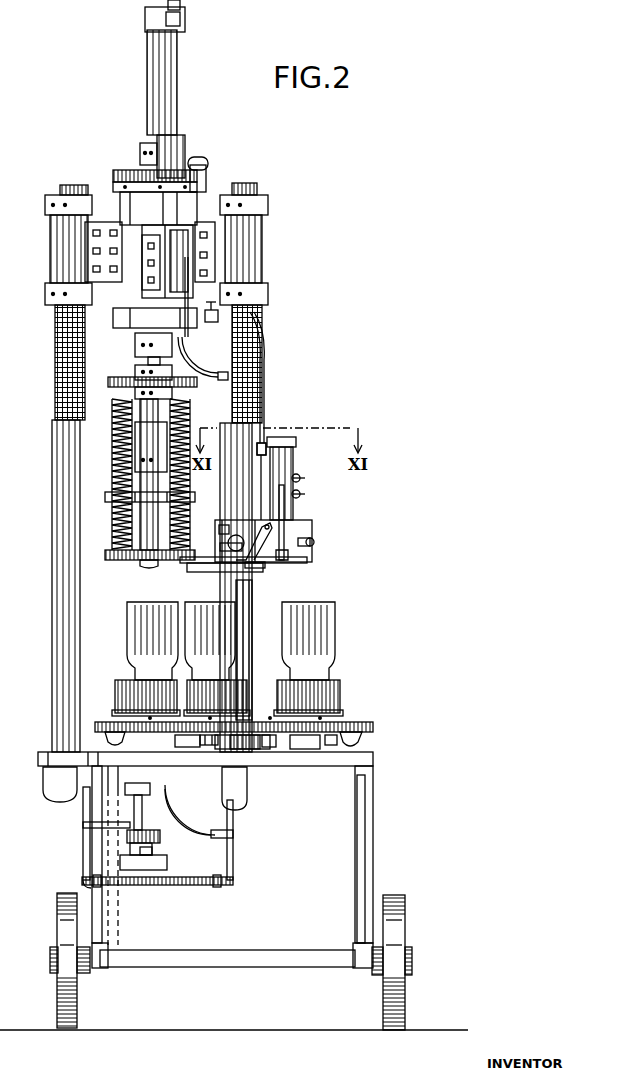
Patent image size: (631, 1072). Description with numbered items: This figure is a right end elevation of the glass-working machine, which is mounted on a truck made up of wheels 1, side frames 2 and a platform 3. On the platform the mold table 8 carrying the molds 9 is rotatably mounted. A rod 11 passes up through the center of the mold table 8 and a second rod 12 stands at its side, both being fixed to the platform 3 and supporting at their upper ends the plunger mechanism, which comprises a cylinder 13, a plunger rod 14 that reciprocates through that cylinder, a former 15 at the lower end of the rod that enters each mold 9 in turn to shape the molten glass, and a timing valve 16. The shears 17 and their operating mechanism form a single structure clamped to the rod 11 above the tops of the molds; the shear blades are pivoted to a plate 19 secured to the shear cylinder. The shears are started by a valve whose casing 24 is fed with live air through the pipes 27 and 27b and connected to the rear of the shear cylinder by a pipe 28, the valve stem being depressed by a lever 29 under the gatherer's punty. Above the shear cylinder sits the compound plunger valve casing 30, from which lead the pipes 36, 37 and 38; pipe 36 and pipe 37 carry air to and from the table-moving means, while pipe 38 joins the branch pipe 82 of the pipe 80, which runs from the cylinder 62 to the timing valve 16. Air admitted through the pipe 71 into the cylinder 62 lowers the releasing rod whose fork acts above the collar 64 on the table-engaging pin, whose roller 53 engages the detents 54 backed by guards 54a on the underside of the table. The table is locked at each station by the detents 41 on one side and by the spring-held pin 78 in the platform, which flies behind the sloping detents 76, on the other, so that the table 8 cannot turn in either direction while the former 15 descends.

The wheels 1 is at (57, 928).
The side frames 2 is at (373, 813).
The platform 3 is at (376, 757).
The mold table 8 is at (362, 722).
The molds 9 is at (127, 640).
The rod 11 is at (246, 652).
The rod 12 is at (52, 589).
The cylinder 13 is at (120, 195).
The plunger rod 14 is at (149, 89).
The former 15 is at (148, 540).
The timing valve 16 is at (167, 287).
The shears 17 is at (203, 570).
The plate 19 is at (283, 565).
The valve casing 24 is at (275, 553).
The pipe 27 is at (287, 534).
The pipe 27b is at (188, 292).
The pipe 28 is at (312, 543).
The lever 29 is at (253, 572).
The valve casing 30 is at (285, 453).
The pipe 36 is at (305, 479).
The pipe 37 is at (305, 495).
The pipe 38 is at (279, 470).
The detents 41 is at (333, 742).
The roller 53 is at (137, 751).
The detents 54 is at (253, 742).
The guards 54a is at (268, 742).
The cylinder 62 is at (150, 862).
The collar 64 is at (130, 812).
The pipe 71 is at (120, 828).
The detents 76 is at (110, 743).
The pin 78 is at (232, 737).
The pipe 80 is at (222, 357).
The pipe 82 is at (265, 379).